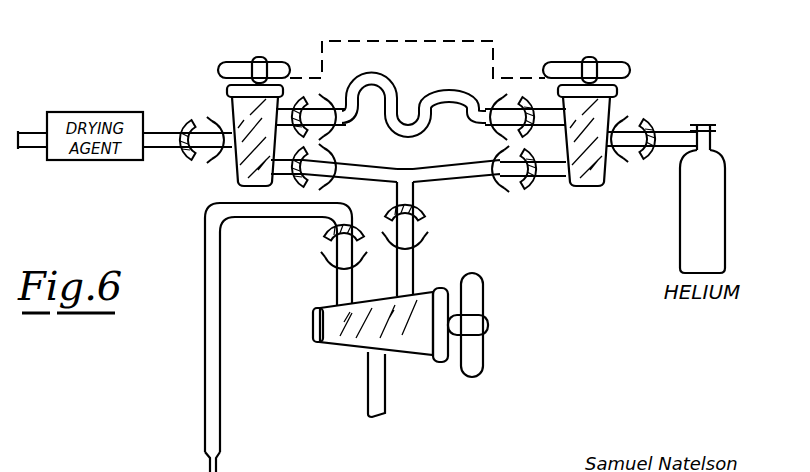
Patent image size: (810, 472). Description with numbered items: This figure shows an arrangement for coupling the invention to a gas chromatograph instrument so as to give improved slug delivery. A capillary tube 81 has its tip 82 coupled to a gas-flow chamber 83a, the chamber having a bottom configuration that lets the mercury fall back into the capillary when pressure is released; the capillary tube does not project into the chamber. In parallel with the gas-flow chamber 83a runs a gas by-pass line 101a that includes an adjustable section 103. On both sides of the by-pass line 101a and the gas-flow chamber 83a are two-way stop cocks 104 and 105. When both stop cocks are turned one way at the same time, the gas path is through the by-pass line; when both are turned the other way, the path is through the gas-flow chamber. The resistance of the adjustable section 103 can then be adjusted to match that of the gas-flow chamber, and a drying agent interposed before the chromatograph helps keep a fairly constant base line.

The capillary tube 81 is at (417, 198).
The tip 82 is at (412, 168).
The gas-flow chamber 83a is at (450, 166).
The gas by-pass line 101a is at (337, 110).
The adjustable section 103 is at (446, 92).
The two-way stop cock 104 is at (276, 57).
The two-way stop cock 105 is at (618, 69).